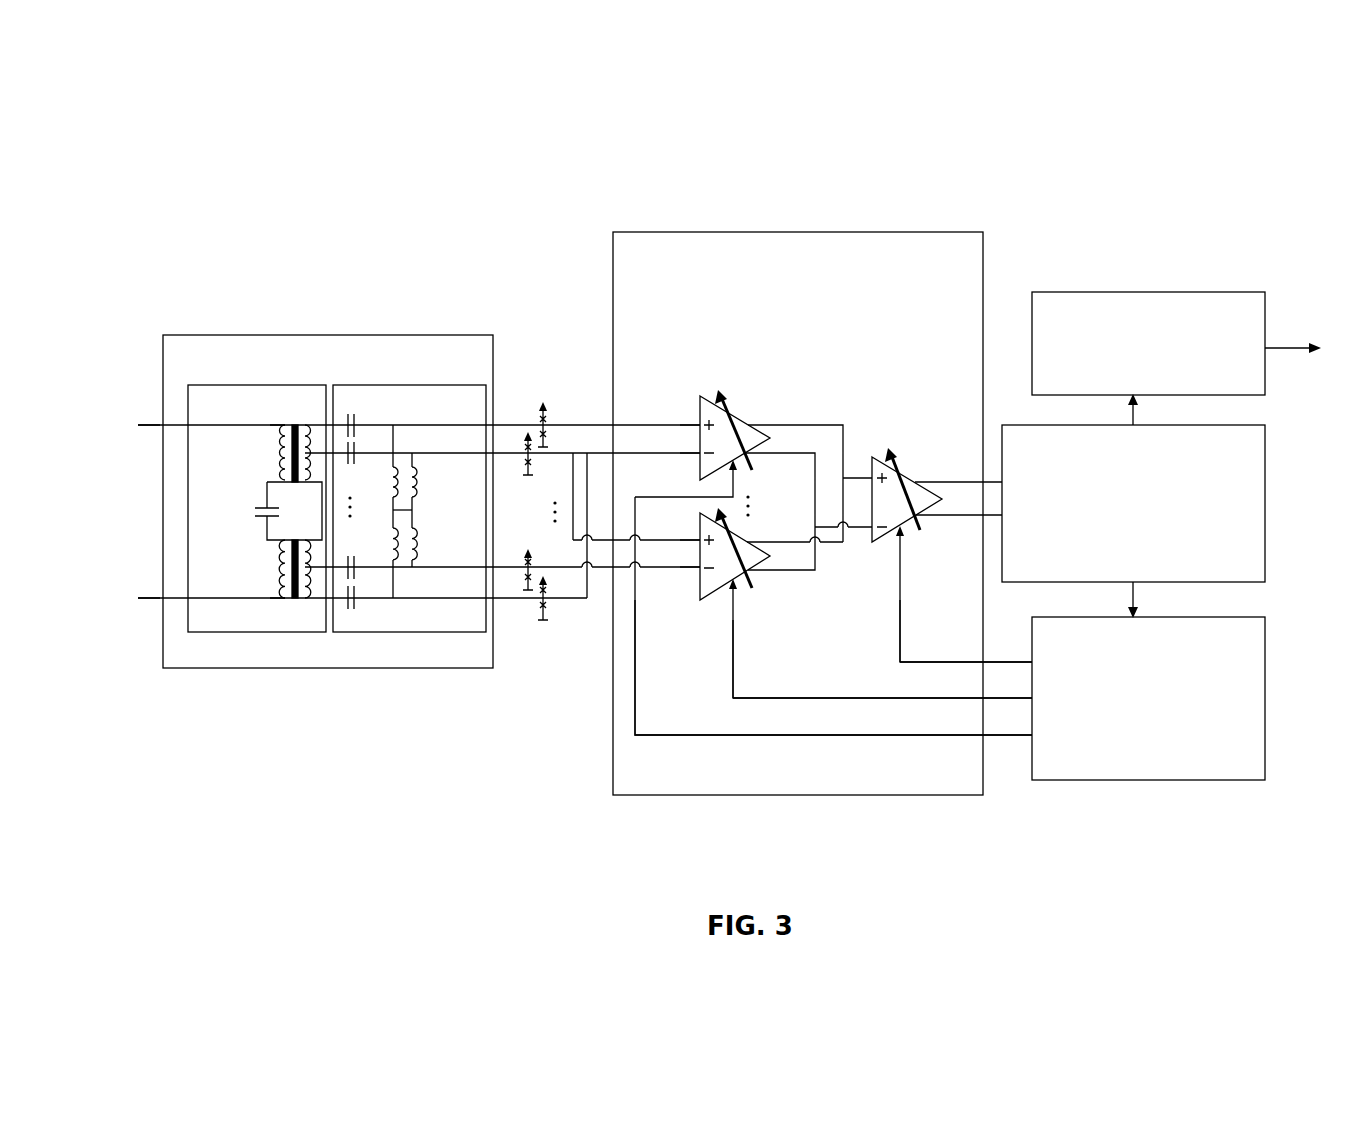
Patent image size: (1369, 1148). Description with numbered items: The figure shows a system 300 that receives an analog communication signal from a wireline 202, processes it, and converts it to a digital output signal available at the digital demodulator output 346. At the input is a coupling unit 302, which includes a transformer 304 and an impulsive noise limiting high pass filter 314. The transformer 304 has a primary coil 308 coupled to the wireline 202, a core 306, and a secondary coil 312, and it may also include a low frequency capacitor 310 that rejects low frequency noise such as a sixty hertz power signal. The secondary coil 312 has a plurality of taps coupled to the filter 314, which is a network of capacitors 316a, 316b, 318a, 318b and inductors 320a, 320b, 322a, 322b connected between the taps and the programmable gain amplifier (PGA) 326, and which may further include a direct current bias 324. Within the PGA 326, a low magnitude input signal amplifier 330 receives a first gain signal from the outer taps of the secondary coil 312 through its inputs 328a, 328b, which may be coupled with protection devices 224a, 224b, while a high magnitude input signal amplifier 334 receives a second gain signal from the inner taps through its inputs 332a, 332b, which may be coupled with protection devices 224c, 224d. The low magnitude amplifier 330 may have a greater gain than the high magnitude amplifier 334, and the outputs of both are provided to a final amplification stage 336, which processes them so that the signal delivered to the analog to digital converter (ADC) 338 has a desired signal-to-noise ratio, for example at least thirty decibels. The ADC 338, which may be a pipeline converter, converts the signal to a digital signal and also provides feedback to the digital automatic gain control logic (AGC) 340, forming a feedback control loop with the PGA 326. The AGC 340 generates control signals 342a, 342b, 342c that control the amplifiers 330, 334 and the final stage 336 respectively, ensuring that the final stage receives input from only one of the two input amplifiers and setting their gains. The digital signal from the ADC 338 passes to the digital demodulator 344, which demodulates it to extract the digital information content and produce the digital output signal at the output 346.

The system 300 is at (114, 185).
The wireline 202 is at (152, 426).
The coupling unit 302 is at (446, 368).
The transformer 304 is at (205, 633).
The core 306 is at (285, 424).
The primary coil 308 is at (280, 455).
The low frequency capacitor 310 is at (262, 517).
The secondary coil 312 is at (303, 424).
The impulsive noise limiting high pass filter 314 is at (350, 633).
The capacitor 316a is at (357, 424).
The capacitor 316b is at (357, 602).
The capacitor 318a is at (358, 451).
The capacitor 318b is at (358, 572).
The inductor 320a is at (385, 495).
The inductor 320b is at (382, 527).
The inductor 322a is at (445, 487).
The inductor 322b is at (415, 528).
The direct current (DC) bias 324 is at (413, 510).
The protection device 224a is at (540, 418).
The protection device 224b is at (543, 622).
The protection device 224c is at (530, 450).
The protection device 224d is at (528, 593).
The programmable gain amplifier (PGA) 326 is at (778, 336).
The input of low magnitude input signal amplifier 328a is at (698, 422).
The input of low magnitude input signal amplifier 328b is at (698, 457).
The low magnitude input signal amplifier 330 is at (738, 410).
The input of high magnitude input signal amplifier 332a is at (698, 536).
The input of high magnitude input signal amplifier 332b is at (698, 572).
The high magnitude input signal amplifier 334 is at (749, 524).
The final amplification stage 336 is at (918, 478).
The analog to digital converter (ADC) 338 is at (1113, 542).
The digital automatic gain control logic (AGC) 340 is at (1128, 774).
The control signal 342a is at (636, 730).
The control signal 342b is at (736, 660).
The control signal 342c is at (902, 635).
The digital demodulator 344 is at (1128, 389).
The digital demodulator output 346 is at (1300, 347).